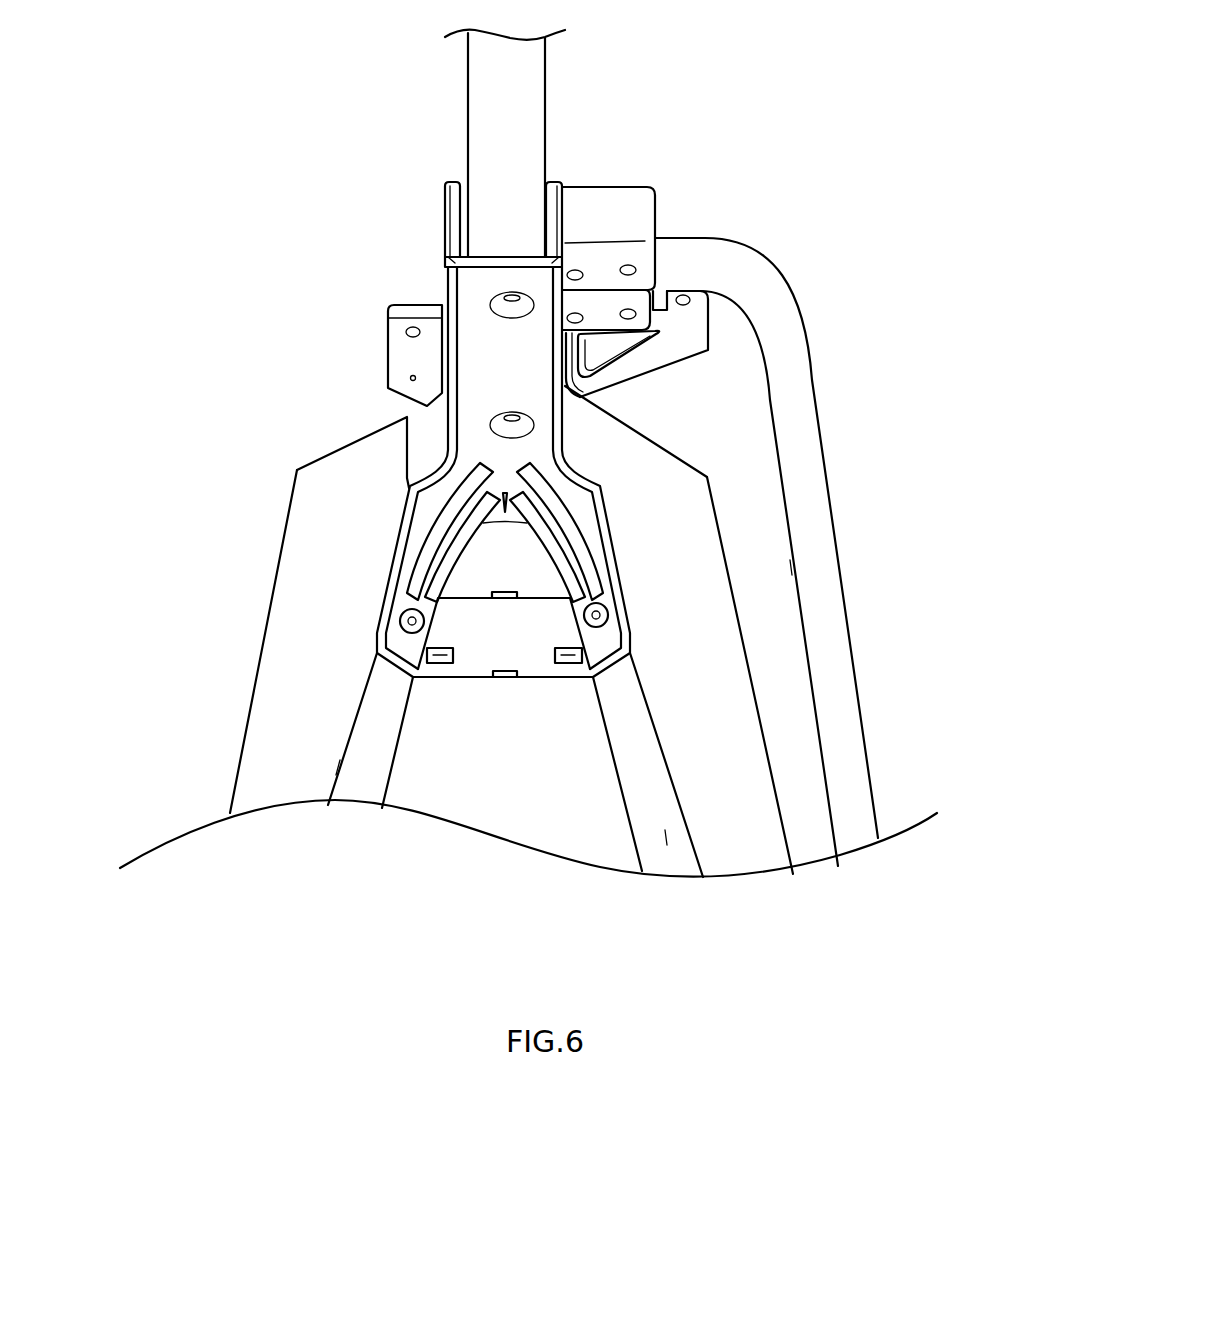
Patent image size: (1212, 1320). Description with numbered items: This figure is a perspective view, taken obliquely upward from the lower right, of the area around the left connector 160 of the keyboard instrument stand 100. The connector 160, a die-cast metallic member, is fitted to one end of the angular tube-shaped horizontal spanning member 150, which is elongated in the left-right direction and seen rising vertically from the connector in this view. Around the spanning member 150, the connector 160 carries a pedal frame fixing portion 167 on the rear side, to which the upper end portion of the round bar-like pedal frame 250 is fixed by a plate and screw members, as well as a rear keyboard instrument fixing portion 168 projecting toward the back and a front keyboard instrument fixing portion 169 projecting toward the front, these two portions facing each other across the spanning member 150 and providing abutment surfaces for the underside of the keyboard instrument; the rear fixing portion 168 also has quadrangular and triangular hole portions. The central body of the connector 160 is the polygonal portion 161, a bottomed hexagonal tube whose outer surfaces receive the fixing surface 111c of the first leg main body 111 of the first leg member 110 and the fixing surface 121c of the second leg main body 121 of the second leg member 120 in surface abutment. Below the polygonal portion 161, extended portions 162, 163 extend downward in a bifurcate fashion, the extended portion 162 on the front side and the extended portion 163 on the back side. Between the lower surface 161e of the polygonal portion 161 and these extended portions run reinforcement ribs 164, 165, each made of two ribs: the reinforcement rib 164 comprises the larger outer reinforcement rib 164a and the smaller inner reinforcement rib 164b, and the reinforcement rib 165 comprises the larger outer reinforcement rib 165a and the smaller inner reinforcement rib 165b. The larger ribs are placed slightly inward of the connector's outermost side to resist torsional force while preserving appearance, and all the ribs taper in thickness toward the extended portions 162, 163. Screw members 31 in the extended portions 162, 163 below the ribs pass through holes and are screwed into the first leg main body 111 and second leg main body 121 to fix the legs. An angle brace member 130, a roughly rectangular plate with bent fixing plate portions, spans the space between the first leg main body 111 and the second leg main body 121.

The stand 100 is at (372, 157).
The horizontal spanning member 150 is at (523, 117).
The pedal frame fixing portion 167 is at (665, 203).
The rear keyboard instrument fixing portion 168 is at (688, 325).
The front keyboard instrument fixing portion 169 is at (385, 338).
The connector 160 is at (640, 397).
The polygonal portion 161 is at (427, 427).
The lower surface of the polygonal portion 161e is at (504, 503).
The reinforcement rib 164 is at (304, 485).
The outer reinforcement rib 164a is at (470, 530).
The inner reinforcement rib 164b is at (432, 530).
The reinforcement rib 165 is at (763, 512).
The outer reinforcement rib 165a is at (583, 537).
The inner reinforcement rib 165b is at (542, 538).
The screw member 31 is at (405, 628).
The angle brace member 130 is at (533, 657).
The extended portion 162 is at (370, 659).
The extended portion 163 is at (608, 647).
The first leg member 110 is at (261, 667).
The first leg main body 111 is at (289, 527).
The fixing surface 111c is at (363, 775).
The second leg member 120 is at (810, 721).
The second leg main body 121 is at (722, 555).
The fixing surface 121c is at (666, 845).
The pedal frame 250 is at (817, 575).